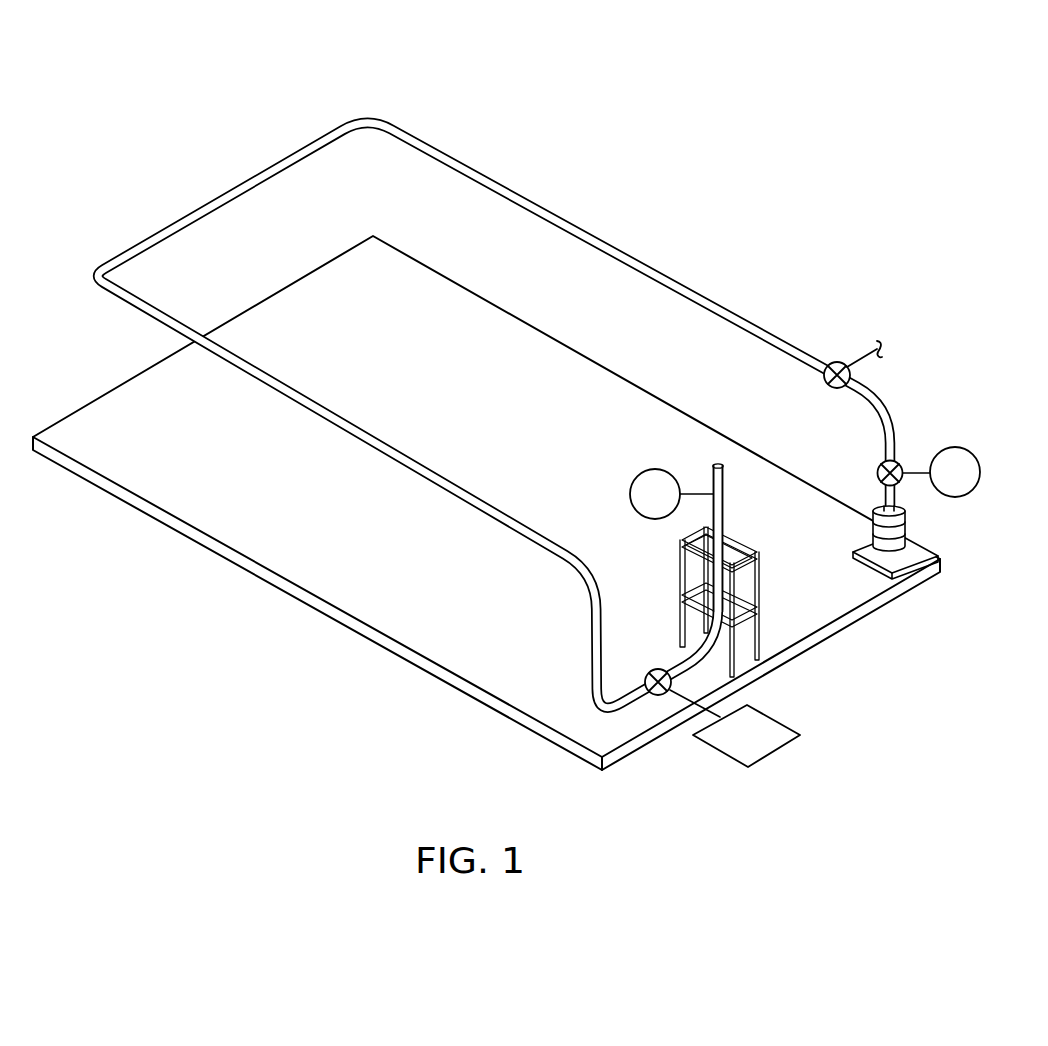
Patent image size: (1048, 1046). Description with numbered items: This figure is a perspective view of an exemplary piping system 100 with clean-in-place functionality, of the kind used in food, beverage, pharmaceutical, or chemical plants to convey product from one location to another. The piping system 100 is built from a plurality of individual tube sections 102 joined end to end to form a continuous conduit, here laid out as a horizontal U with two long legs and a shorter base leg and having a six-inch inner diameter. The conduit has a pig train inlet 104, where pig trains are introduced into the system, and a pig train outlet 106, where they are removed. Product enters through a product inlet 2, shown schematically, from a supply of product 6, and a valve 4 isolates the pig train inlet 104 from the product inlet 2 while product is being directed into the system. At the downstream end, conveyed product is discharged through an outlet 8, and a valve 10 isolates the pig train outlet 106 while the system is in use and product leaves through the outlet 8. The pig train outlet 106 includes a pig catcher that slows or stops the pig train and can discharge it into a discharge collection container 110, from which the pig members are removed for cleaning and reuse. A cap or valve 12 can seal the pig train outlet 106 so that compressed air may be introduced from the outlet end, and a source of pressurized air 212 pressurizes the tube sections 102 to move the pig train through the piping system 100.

The piping system 100 is at (585, 226).
The tube sections 102 is at (364, 108).
The pig train inlet 104 is at (714, 464).
The pig train outlet 106 is at (900, 517).
The discharge collection container 110 is at (887, 550).
The product inlet 2 is at (688, 697).
The valve 4 is at (655, 668).
The supply of product 6 is at (760, 727).
The outlet 8 is at (873, 352).
The valve 10 is at (823, 377).
The cap or valve 12 is at (880, 465).
The source of pressurized air 212 is at (637, 492).